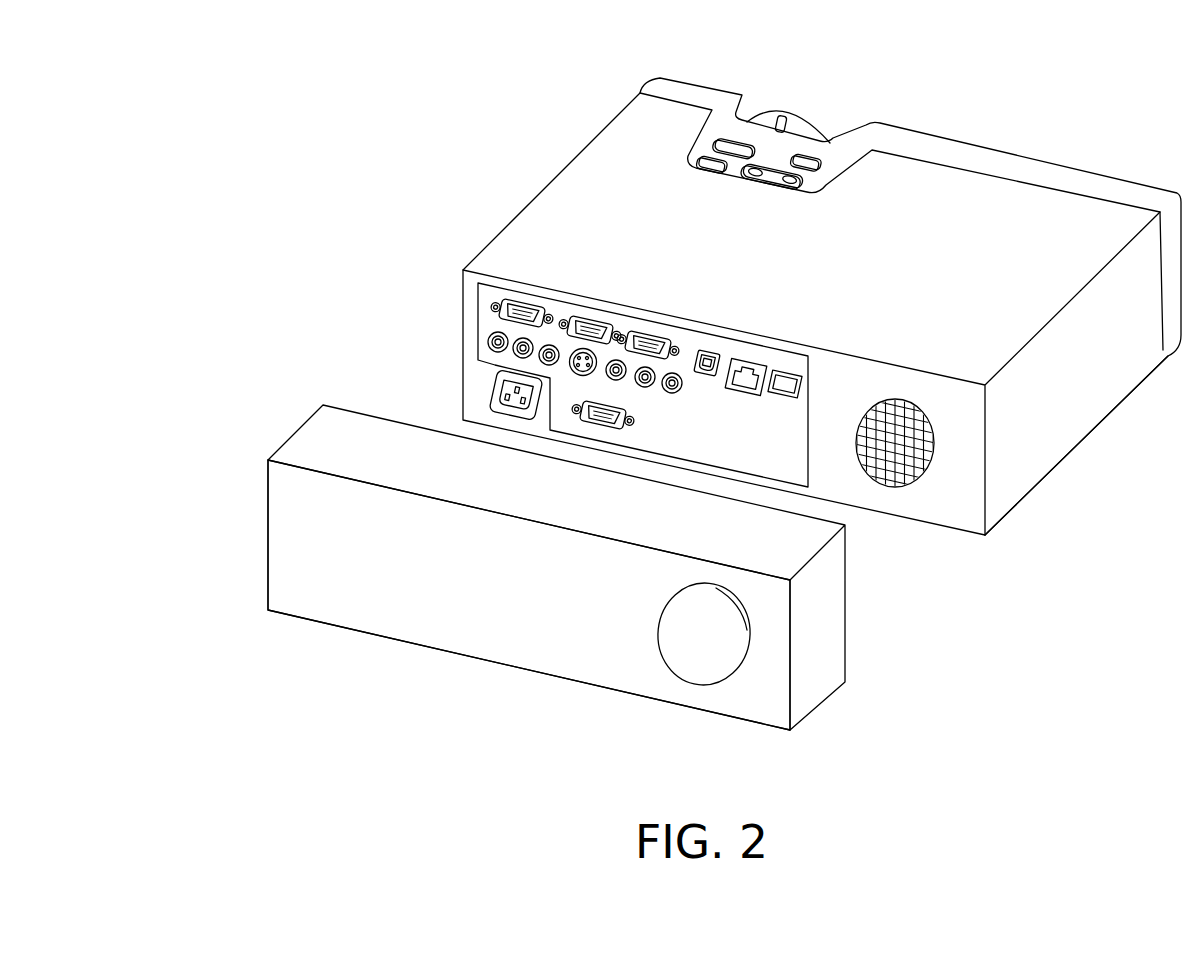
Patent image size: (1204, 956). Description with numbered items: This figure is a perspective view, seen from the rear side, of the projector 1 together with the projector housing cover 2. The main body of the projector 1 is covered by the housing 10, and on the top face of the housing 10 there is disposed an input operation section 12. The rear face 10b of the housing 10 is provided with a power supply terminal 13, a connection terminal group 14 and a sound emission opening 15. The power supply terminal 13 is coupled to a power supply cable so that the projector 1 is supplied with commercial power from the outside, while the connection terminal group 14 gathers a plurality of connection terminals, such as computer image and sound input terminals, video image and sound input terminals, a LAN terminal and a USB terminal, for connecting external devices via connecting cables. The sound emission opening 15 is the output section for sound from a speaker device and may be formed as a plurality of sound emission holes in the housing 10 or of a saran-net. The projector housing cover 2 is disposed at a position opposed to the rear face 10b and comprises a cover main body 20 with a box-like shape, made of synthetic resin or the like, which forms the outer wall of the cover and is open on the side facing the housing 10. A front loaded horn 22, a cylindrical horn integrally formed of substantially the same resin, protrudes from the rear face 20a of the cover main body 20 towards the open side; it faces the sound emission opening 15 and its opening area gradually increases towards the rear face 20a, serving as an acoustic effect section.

The projector 1 is at (1088, 136).
The housing 10 is at (615, 145).
The input operation section 12 is at (810, 178).
The power supply terminal 13 is at (492, 397).
The connection terminal group 14 is at (490, 324).
The sound emission opening 15 is at (887, 487).
The rear face 10b is at (962, 495).
The projector housing cover 2 is at (331, 650).
The cover main body 20 is at (453, 628).
The rear face 20a is at (557, 653).
The front loaded horn 22 is at (707, 657).